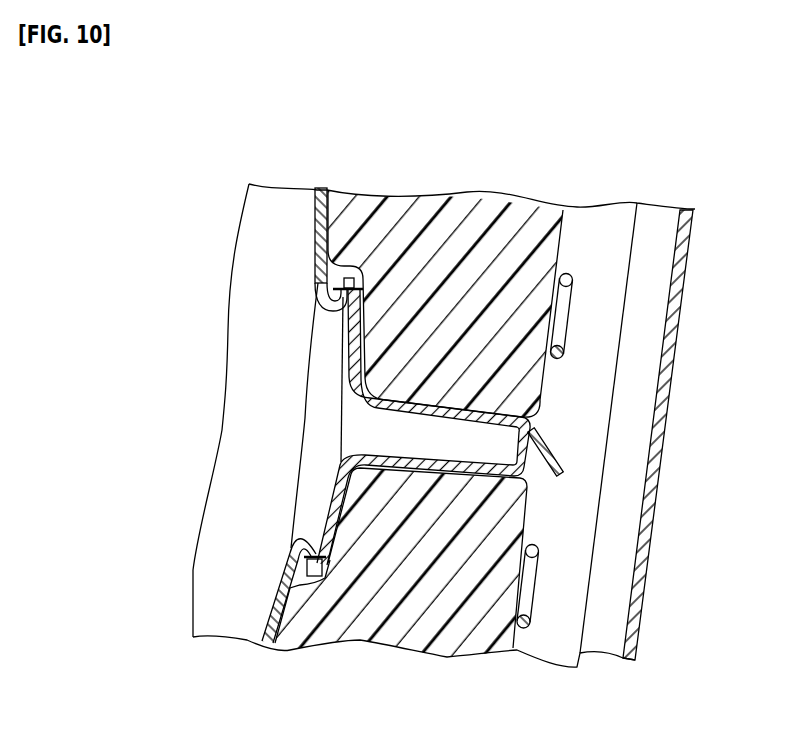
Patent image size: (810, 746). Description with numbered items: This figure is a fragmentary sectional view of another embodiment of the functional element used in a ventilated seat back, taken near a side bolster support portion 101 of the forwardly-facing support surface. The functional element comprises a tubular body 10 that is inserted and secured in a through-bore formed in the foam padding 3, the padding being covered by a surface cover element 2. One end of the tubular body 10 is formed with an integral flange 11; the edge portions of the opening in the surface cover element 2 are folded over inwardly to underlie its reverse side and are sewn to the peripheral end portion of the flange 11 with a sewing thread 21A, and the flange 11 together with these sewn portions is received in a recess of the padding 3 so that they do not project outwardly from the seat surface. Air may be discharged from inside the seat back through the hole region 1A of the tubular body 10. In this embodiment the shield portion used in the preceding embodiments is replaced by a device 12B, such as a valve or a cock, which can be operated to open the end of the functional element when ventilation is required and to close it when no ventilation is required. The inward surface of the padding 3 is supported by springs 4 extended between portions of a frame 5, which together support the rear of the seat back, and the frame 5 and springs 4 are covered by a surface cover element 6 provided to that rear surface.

The surface cover element 2 is at (317, 220).
The side bolster support portion 101 is at (260, 288).
The sewing thread 21A is at (318, 281).
The flange 11 is at (345, 340).
The hole region 1A is at (336, 414).
The tubular body 10 is at (439, 417).
The device operable to open and close the end of the functional element 12B is at (510, 458).
The foam padding 3 is at (474, 197).
The springs 4 is at (574, 300).
The frame 5 is at (583, 555).
The surface cover element 6 is at (660, 482).